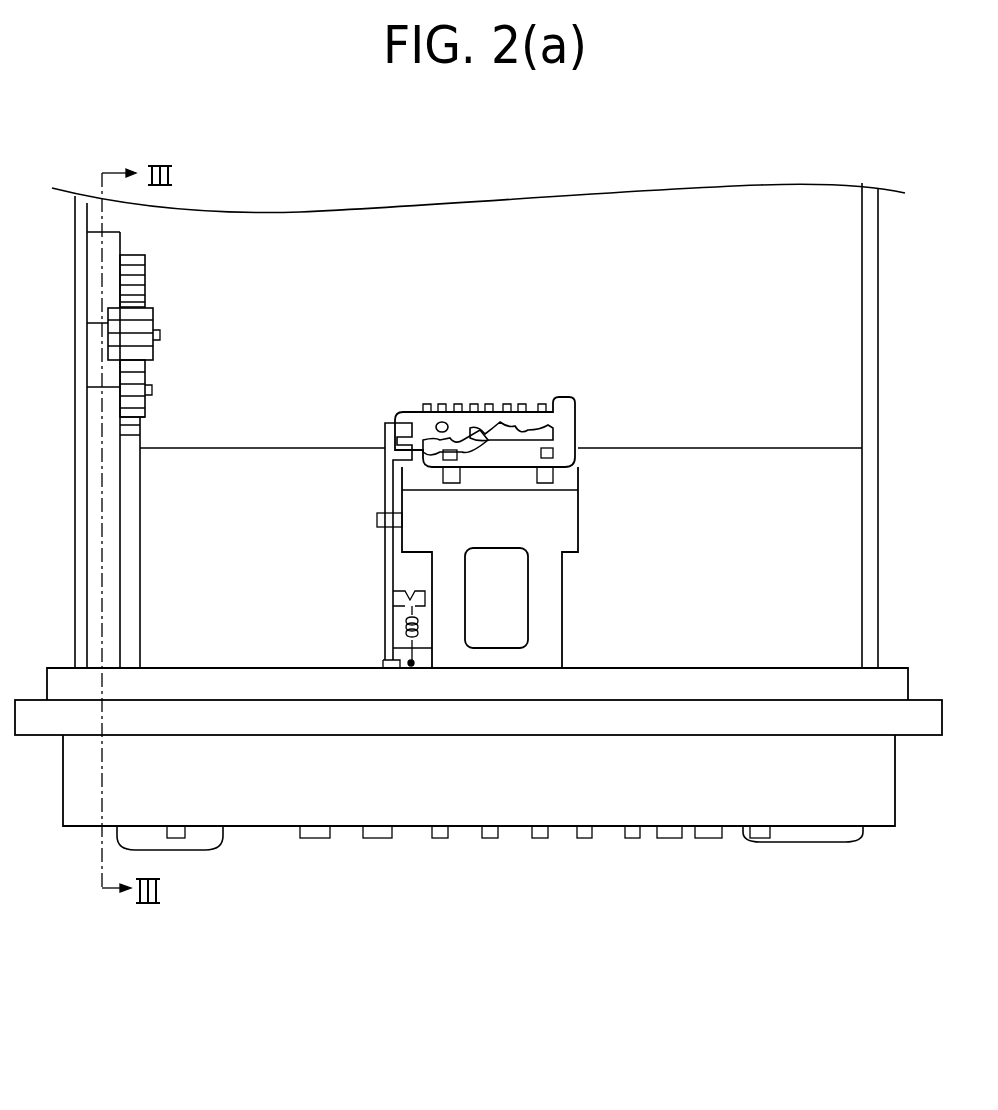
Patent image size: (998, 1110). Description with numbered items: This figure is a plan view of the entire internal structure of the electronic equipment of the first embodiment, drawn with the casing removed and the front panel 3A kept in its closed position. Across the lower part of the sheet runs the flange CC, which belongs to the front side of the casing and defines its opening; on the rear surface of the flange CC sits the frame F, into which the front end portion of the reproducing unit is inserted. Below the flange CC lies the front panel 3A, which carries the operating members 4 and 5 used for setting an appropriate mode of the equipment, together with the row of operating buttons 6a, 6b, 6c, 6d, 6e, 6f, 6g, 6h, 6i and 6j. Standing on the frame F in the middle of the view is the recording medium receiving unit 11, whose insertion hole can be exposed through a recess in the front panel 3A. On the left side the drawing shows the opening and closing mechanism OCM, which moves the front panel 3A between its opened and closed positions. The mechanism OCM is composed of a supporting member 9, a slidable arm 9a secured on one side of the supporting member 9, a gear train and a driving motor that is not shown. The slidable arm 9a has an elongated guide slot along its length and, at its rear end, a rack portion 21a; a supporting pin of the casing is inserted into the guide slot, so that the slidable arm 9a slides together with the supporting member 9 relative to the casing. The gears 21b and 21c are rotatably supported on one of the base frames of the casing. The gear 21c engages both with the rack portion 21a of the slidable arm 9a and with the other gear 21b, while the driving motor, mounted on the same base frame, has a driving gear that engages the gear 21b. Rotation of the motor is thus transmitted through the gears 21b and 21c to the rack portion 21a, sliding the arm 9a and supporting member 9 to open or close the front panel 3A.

The rack portion 21a is at (150, 278).
The gear 21b is at (155, 310).
The gear 21c is at (150, 371).
The supporting member 9 is at (220, 466).
The slidable arm 9a is at (132, 537).
The opening and closing mechanism OCM is at (192, 429).
The recording medium receiving unit 11 is at (543, 397).
The frame F is at (908, 676).
The flange CC is at (942, 712).
The front panel 3A is at (897, 787).
The operating member 4 is at (805, 843).
The operating member 5 is at (180, 852).
The operating button 6a is at (770, 838).
The operating button 6b is at (318, 838).
The operating button 6c is at (378, 838).
The operating button 6d is at (440, 838).
The operating button 6e is at (490, 838).
The operating button 6f is at (540, 838).
The operating button 6g is at (585, 838).
The operating button 6h is at (633, 838).
The operating button 6i is at (670, 838).
The operating button 6j is at (710, 838).